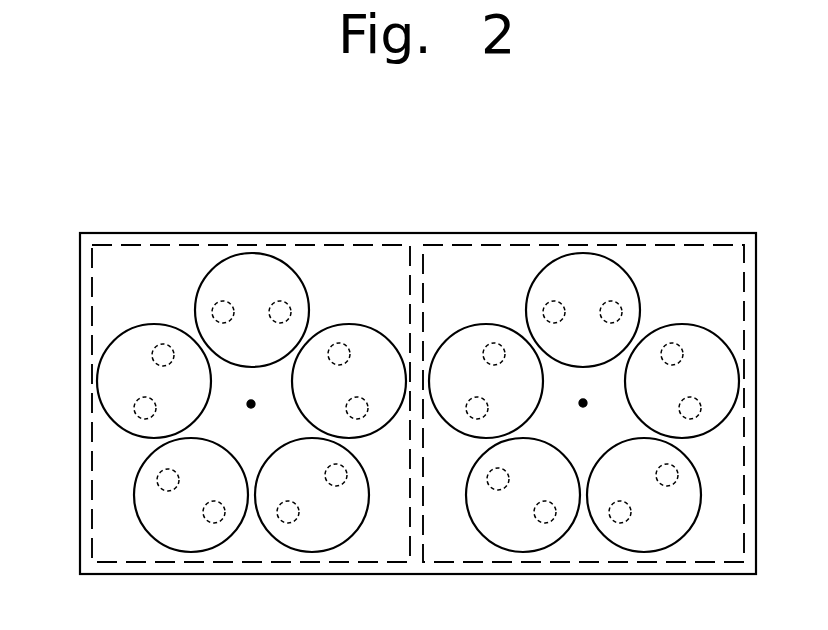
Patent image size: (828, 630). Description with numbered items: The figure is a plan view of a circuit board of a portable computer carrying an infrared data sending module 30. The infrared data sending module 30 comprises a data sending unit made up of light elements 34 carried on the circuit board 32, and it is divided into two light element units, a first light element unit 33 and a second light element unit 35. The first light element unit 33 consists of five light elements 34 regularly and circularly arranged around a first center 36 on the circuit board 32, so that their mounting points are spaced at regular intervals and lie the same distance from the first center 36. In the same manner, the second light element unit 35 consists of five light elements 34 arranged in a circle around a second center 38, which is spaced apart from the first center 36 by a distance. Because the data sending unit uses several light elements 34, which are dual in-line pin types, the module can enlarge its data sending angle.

The infrared data sending module 30 is at (175, 179).
The circuit board 32 is at (268, 240).
The first light element unit 33 is at (366, 245).
The light element 34 is at (107, 380).
The second light element unit 35 is at (578, 245).
The first center 36 is at (251, 408).
The second center 38 is at (583, 407).